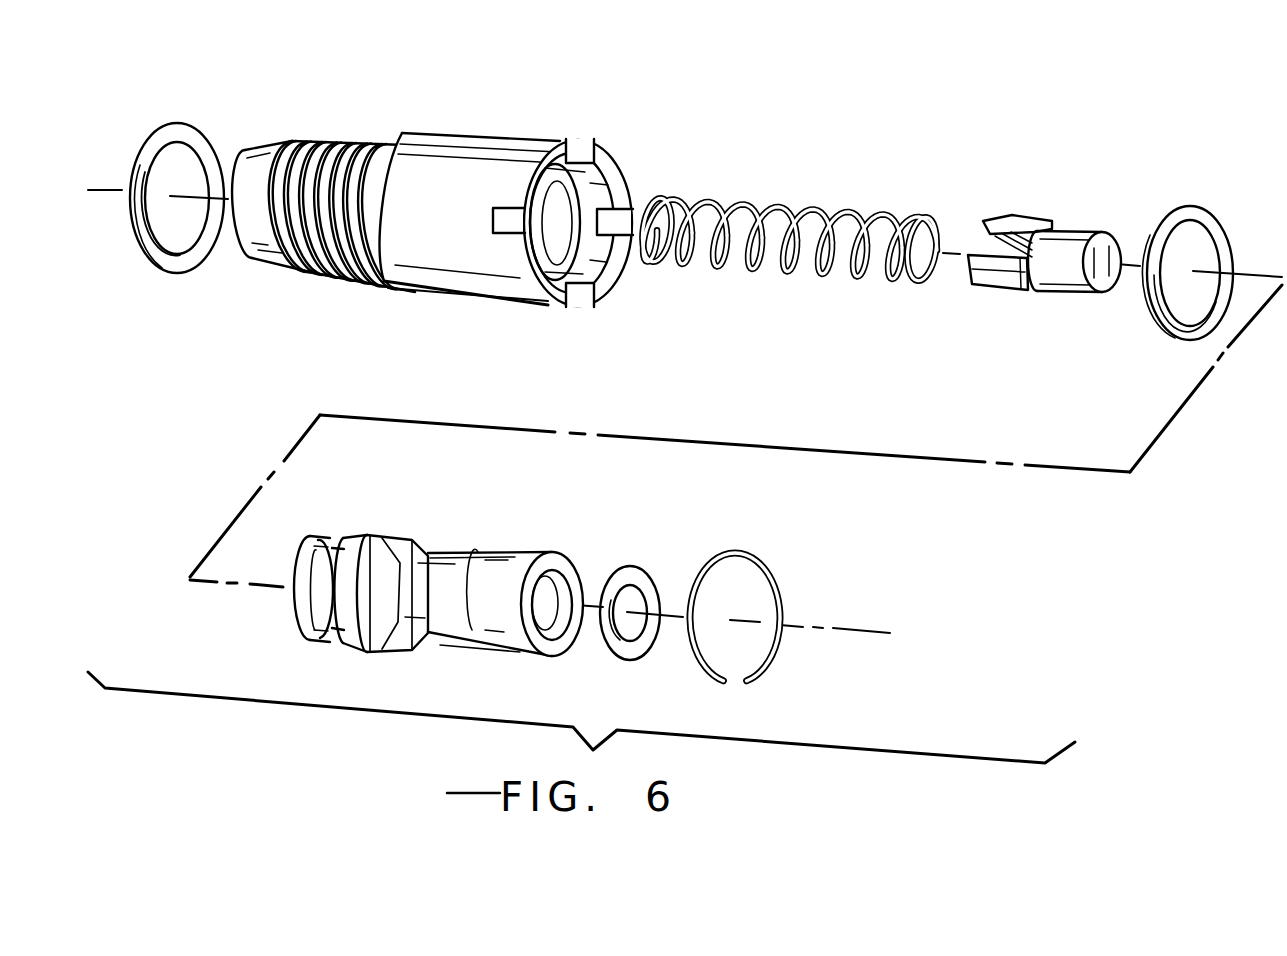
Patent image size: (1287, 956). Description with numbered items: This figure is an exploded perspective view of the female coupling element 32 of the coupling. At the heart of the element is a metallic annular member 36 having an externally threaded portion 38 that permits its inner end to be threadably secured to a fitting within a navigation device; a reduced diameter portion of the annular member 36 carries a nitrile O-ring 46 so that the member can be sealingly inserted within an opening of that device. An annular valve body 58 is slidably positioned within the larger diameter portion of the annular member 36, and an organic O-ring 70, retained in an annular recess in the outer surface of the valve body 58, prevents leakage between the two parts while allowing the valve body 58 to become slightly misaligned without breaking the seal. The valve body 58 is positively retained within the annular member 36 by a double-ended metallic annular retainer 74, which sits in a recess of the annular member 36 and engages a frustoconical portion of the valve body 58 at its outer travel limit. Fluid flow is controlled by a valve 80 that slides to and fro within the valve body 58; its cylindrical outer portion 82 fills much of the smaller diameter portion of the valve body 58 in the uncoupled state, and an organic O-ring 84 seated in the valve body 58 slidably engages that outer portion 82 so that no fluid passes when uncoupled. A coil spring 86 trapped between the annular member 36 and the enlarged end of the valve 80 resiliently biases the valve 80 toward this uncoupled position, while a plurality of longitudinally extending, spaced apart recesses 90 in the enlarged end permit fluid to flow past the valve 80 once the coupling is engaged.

The female coupling element 32 is at (650, 124).
The annular member 36 is at (497, 133).
The externally threaded portion 38 is at (333, 140).
The nitrile O-ring 46 is at (207, 138).
The annular valve body 58 is at (463, 550).
The organic O-ring 70 is at (1230, 153).
The double-ended metallic annular retainer 74 is at (760, 567).
The valve 80 is at (1047, 220).
The cylindrical outer portion 82 is at (1080, 223).
The organic O-ring 84 is at (633, 570).
The coil spring 86 is at (807, 213).
The recesses 90 is at (990, 248).